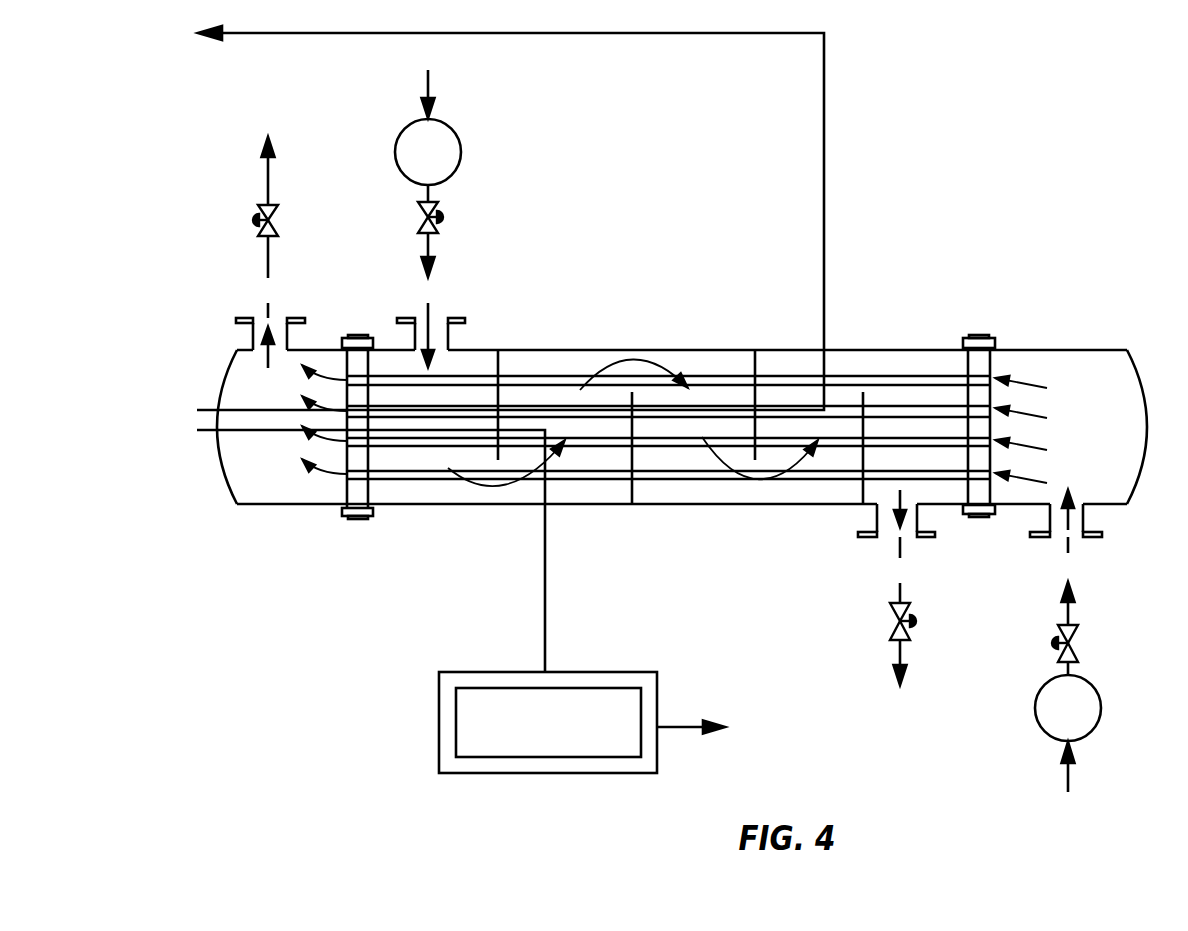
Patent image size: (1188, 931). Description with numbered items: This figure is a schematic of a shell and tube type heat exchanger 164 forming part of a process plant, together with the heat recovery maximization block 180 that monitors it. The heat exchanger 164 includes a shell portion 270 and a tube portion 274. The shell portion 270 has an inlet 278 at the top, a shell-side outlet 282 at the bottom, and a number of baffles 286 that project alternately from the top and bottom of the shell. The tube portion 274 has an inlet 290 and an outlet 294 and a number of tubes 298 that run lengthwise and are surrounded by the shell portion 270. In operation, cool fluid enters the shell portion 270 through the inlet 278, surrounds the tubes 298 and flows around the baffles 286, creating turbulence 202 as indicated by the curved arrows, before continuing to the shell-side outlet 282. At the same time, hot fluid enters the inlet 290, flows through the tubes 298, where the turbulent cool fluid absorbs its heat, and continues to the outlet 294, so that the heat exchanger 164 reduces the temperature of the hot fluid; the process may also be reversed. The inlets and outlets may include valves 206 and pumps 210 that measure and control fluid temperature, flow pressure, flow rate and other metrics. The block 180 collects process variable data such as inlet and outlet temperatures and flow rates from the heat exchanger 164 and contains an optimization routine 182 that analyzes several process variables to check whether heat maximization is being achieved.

The heat exchanger 164 is at (846, 250).
The heat recovery maximization block 180 is at (446, 626).
The optimization routine 182 is at (457, 703).
The turbulence 202 is at (682, 411).
The valves 206 is at (423, 215).
The pumps 210 is at (460, 147).
The shell portion 270 is at (483, 347).
The tube portion 274 is at (321, 348).
The inlet 278 is at (431, 300).
The shell-side outlet nozzle 282 is at (896, 587).
The baffles 286 is at (862, 393).
The inlet 290 is at (1066, 582).
The outlet 294 is at (270, 252).
The tubes 298 is at (917, 472).